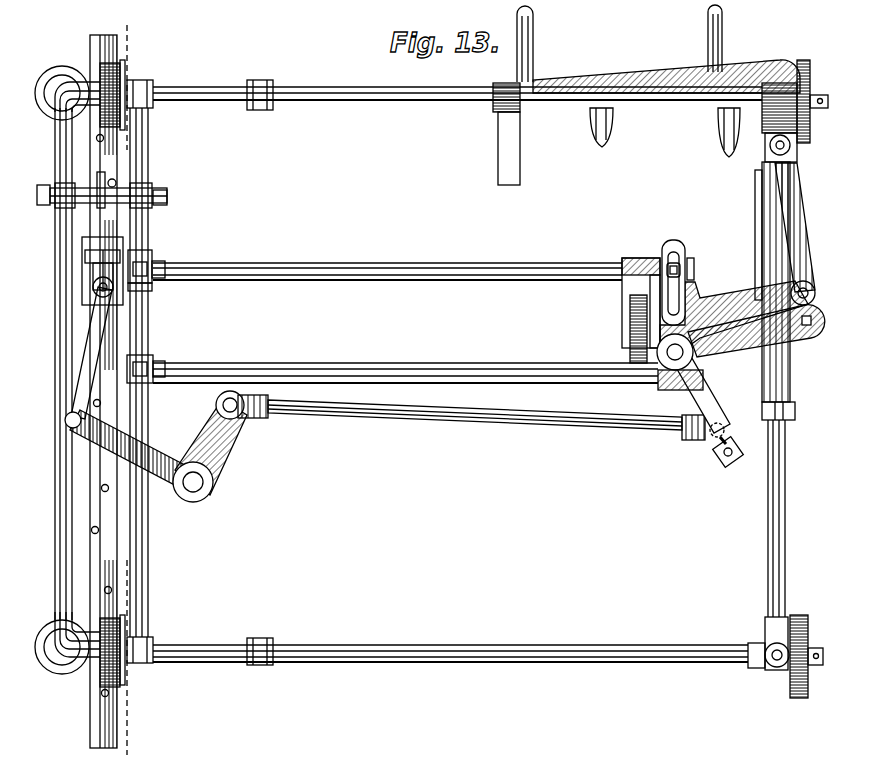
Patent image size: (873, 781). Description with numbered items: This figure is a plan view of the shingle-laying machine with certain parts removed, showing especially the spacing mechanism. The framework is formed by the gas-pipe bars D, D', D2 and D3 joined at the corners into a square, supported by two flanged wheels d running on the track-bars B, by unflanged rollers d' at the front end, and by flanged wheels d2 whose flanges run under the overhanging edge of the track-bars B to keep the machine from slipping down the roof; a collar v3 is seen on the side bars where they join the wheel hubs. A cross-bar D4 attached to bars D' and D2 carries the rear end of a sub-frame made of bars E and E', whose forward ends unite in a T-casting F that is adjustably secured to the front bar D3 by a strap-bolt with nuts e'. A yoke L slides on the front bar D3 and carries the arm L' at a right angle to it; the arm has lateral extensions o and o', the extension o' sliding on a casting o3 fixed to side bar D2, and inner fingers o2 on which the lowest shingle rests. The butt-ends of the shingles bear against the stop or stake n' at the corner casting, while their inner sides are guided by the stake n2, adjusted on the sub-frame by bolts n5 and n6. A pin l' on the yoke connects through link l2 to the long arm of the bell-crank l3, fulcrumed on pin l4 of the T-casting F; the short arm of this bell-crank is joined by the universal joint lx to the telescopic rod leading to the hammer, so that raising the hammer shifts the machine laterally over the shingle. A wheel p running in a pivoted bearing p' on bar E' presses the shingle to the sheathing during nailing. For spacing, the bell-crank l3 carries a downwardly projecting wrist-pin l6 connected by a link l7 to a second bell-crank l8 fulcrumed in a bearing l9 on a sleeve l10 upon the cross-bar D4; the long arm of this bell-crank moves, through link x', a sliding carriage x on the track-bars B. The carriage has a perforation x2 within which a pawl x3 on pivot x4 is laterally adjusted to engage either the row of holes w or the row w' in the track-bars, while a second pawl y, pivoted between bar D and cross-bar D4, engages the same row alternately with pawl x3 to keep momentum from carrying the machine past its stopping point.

The track-bars B is at (95, 458).
The sliding carriage x is at (143, 391).
The holes w is at (65, 364).
The holes w' is at (60, 529).
The flanged wheels d2 is at (64, 382).
The flanged wheels d is at (128, 377).
The frame bar D is at (89, 372).
The side bar D2 is at (457, 80).
The collar v3 is at (240, 88).
The frame bar D' is at (450, 639).
The lateral extension o' is at (524, 59).
The casting o3 is at (495, 148).
The arm L' is at (666, 68).
The lateral extension o is at (721, 38).
The inner fingers o2 is at (665, 132).
The shingle stop or stake n' is at (795, 90).
The pin l' is at (791, 154).
The yoke L is at (784, 291).
The front bar D3 is at (787, 510).
The unflanged wheels d' is at (785, 673).
The rod or link l2 is at (798, 227).
The bell-crank l3 is at (812, 288).
The sub-frame bar E' is at (387, 259).
The sub-frame bar E is at (405, 361).
The pivoted pawl x3 is at (153, 246).
The perforation x2 is at (153, 292).
The cross-bar D4 is at (152, 345).
The second pawl y is at (108, 174).
The pivot x4 is at (82, 240).
The link x' is at (70, 348).
The sleeve l10 is at (150, 425).
The second bell-crank l8 is at (211, 443).
The bearing l9 is at (168, 495).
The link l7 is at (471, 425).
The bearing p' is at (625, 303).
The wheel p is at (617, 329).
The T-casting F is at (734, 311).
The stake n2 is at (672, 240).
The bolt n6 is at (682, 266).
The bolt n5 is at (690, 290).
The nuts e' is at (756, 332).
The wrist-pin l6 is at (705, 445).
The pin l4 is at (658, 388).
The ball-and-socket or universal joint lx is at (727, 463).